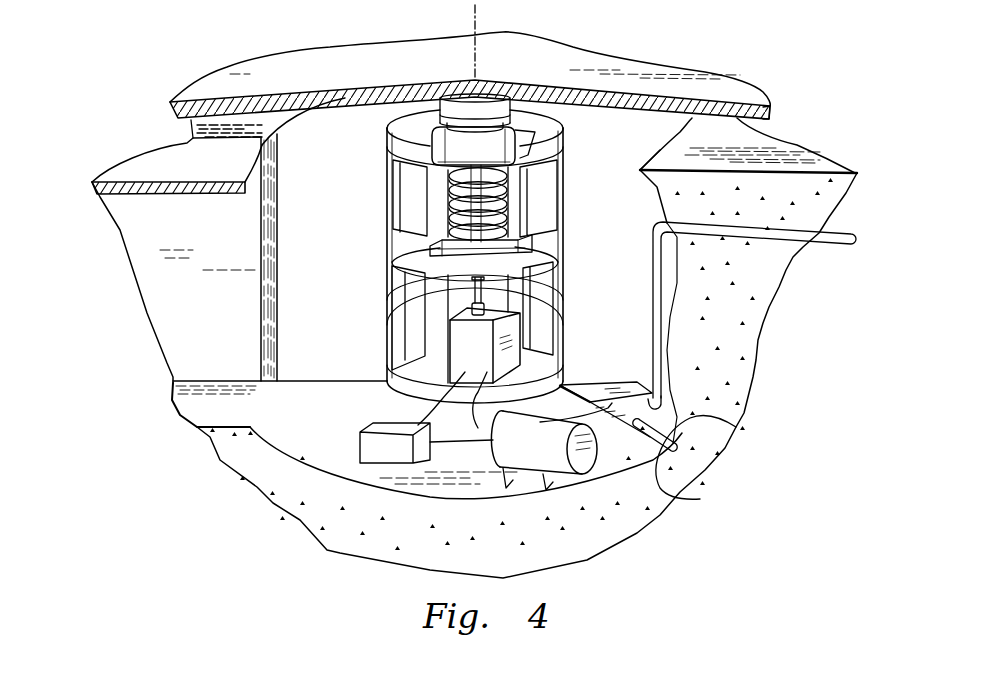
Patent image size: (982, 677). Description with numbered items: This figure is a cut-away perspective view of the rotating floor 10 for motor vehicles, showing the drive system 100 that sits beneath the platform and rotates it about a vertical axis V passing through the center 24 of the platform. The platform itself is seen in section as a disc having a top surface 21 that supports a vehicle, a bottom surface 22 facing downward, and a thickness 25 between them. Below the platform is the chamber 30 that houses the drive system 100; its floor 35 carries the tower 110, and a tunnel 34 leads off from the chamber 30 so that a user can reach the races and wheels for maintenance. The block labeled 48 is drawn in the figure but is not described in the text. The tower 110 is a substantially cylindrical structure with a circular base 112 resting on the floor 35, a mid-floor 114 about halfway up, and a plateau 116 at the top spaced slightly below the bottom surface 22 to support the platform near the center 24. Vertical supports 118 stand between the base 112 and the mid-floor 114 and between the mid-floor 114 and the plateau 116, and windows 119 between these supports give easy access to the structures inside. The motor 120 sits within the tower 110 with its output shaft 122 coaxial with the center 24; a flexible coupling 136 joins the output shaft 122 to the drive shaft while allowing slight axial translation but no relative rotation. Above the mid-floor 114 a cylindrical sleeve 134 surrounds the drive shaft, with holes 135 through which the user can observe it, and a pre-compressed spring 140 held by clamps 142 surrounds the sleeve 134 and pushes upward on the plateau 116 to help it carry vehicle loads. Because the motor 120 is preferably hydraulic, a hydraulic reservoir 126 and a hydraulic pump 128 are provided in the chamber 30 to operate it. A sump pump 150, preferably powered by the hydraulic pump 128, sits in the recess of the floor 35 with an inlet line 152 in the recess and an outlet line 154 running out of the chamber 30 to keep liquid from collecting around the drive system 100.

The rotating floor 10 is at (163, 71).
The top surface 21 is at (320, 86).
The bottom surface 22 is at (350, 107).
The center 24 is at (478, 80).
The thickness 25 is at (771, 113).
The chamber 30 is at (322, 400).
The tunnel 34 is at (210, 355).
The floor 35 is at (333, 431).
The foundation block 48 is at (212, 172).
The drive system 100 is at (597, 131).
The tower 110 is at (562, 222).
The circular base 112 is at (398, 384).
The mid-floor 114 is at (520, 270).
The plateau 116 is at (400, 113).
The vertical supports 118 is at (520, 183).
The windows 119 is at (418, 217).
The motor 120 is at (490, 355).
The output shaft 122 is at (472, 310).
The hydraulic reservoir 126 is at (547, 454).
The hydraulic pump 128 is at (407, 459).
The cylindrical sleeve 134 is at (445, 187).
The holes 135 is at (487, 247).
The flexible coupling 136 is at (475, 292).
The spring 140 is at (520, 215).
The clamps 142 is at (452, 248).
The sump pump 150 is at (592, 385).
The inlet line 152 is at (692, 498).
The outlet line 154 is at (828, 243).
The vertical axis V is at (478, 22).